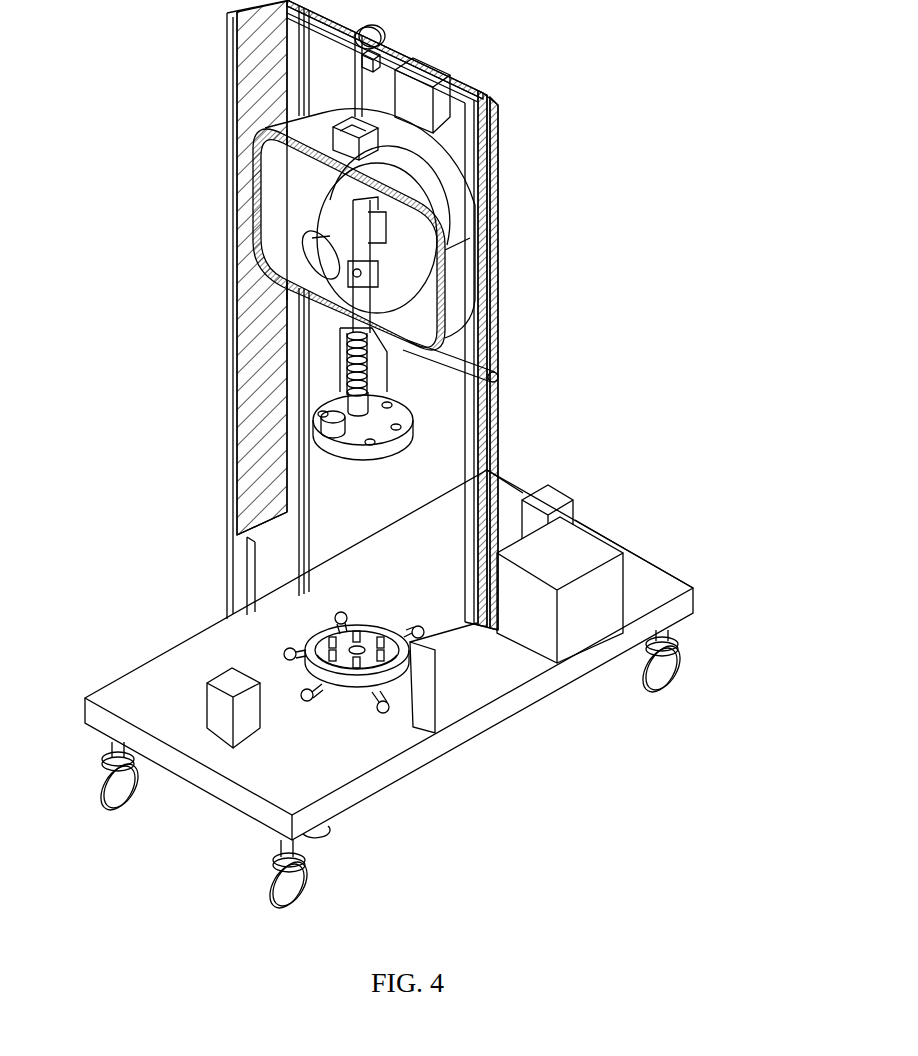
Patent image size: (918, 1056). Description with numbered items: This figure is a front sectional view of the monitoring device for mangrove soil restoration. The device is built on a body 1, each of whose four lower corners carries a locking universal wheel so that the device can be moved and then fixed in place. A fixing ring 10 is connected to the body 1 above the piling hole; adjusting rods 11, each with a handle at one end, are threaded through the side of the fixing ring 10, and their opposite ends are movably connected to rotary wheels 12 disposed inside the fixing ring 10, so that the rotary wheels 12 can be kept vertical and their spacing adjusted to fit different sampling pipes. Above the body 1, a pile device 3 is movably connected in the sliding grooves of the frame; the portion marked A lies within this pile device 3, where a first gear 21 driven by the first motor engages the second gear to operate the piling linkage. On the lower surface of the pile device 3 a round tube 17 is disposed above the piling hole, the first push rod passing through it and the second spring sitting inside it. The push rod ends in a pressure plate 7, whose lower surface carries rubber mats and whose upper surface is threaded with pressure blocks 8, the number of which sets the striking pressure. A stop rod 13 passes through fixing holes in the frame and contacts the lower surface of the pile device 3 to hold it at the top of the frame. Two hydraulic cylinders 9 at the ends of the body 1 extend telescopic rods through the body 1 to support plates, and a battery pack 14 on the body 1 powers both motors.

The body 1 is at (165, 698).
The pile device 3 is at (412, 170).
The disc A is at (452, 262).
The first gear 21 is at (316, 252).
The round tube 17 is at (380, 372).
The stop rod 13 is at (490, 372).
The pressure plate 7 is at (390, 435).
The pressure block 8 is at (322, 432).
The hydraulic cylinder 9 is at (220, 715).
The battery pack 14 is at (567, 558).
The fixing ring 10 is at (306, 676).
The rotary wheel 12 is at (346, 673).
The adjusting rod 11 is at (383, 708).